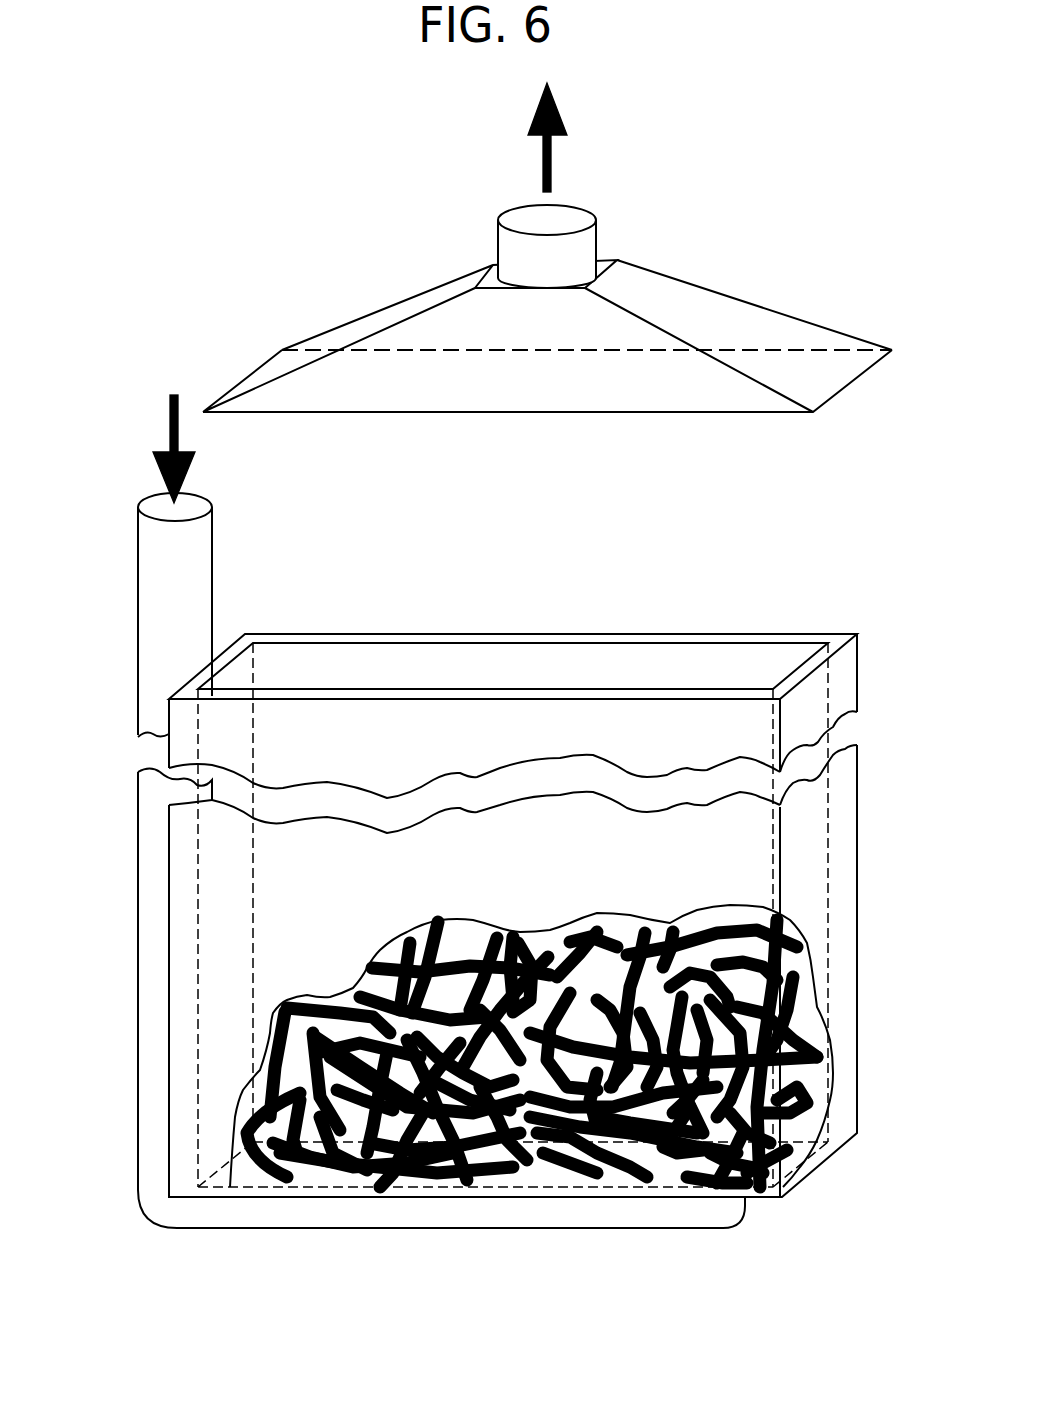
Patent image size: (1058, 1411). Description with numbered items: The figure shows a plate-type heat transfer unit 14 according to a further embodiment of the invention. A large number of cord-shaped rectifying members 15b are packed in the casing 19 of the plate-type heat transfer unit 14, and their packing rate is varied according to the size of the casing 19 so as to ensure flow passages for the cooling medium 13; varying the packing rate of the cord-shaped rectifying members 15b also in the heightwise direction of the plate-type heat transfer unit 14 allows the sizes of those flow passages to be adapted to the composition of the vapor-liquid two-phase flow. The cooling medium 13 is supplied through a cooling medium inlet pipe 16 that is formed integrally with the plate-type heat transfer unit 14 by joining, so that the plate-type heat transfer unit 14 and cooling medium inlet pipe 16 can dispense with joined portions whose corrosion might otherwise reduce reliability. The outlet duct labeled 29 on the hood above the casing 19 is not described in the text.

The cooling medium 13 is at (359, 293).
The plate-type heat transfer unit 14 is at (838, 980).
The cord-shaped rectifying members 15b is at (760, 905).
The cooling medium inlet pipe 16 is at (150, 653).
The casing 19 is at (838, 683).
The exhaust duct 29 is at (586, 241).